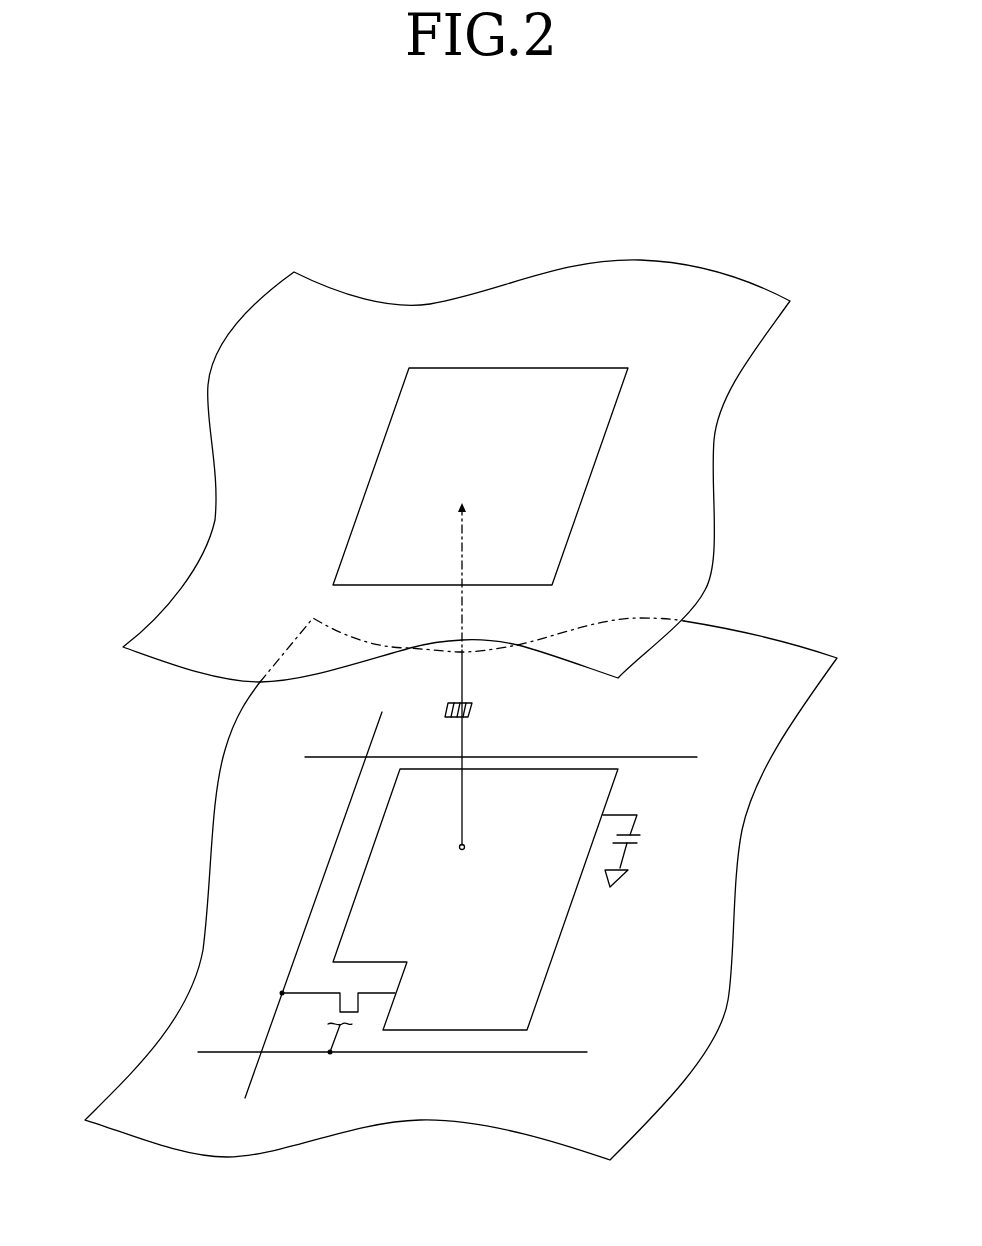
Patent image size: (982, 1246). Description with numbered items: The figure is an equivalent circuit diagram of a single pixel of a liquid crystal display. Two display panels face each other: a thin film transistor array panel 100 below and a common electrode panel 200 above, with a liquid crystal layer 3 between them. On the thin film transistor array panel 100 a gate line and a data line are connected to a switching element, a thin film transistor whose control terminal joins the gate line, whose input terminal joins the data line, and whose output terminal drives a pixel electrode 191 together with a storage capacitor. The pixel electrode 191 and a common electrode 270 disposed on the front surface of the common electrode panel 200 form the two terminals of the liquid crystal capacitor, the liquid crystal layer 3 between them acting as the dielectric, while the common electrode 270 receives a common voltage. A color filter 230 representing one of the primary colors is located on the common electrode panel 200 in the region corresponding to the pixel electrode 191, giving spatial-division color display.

The liquid crystal layer 3 is at (112, 771).
The thin film transistor array panel 100 is at (756, 864).
The pixel electrode 191 is at (555, 960).
The common electrode panel 200 is at (730, 502).
The color filter 230 is at (583, 493).
The common electrode 270 is at (708, 440).